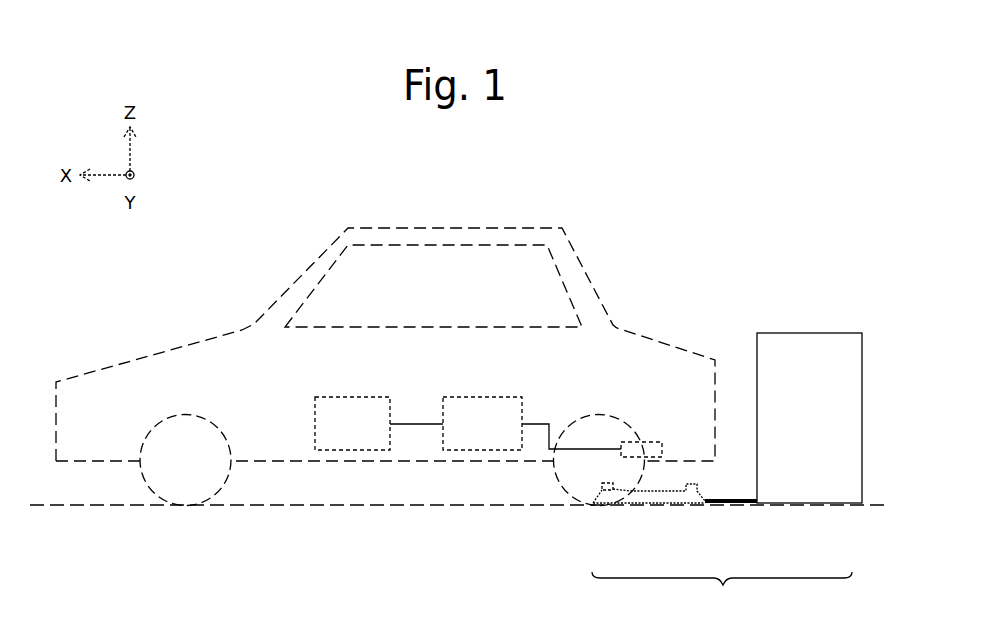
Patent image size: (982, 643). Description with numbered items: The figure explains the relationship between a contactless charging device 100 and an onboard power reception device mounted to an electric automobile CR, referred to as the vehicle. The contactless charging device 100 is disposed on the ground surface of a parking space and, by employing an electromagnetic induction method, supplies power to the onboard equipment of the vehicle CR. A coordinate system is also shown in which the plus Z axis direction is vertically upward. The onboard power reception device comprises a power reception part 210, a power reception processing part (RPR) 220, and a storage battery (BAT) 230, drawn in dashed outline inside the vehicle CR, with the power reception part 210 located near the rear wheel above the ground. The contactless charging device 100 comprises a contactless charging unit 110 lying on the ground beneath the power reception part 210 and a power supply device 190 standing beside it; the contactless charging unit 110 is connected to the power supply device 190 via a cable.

The electric automobile CR is at (578, 258).
The storage battery 230 is at (356, 397).
The power reception processing part 220 is at (486, 397).
The power reception part 210 is at (657, 442).
The contactless charging unit 110 is at (652, 504).
The power supply device 190 is at (787, 504).
The contactless charging device 100 is at (722, 593).